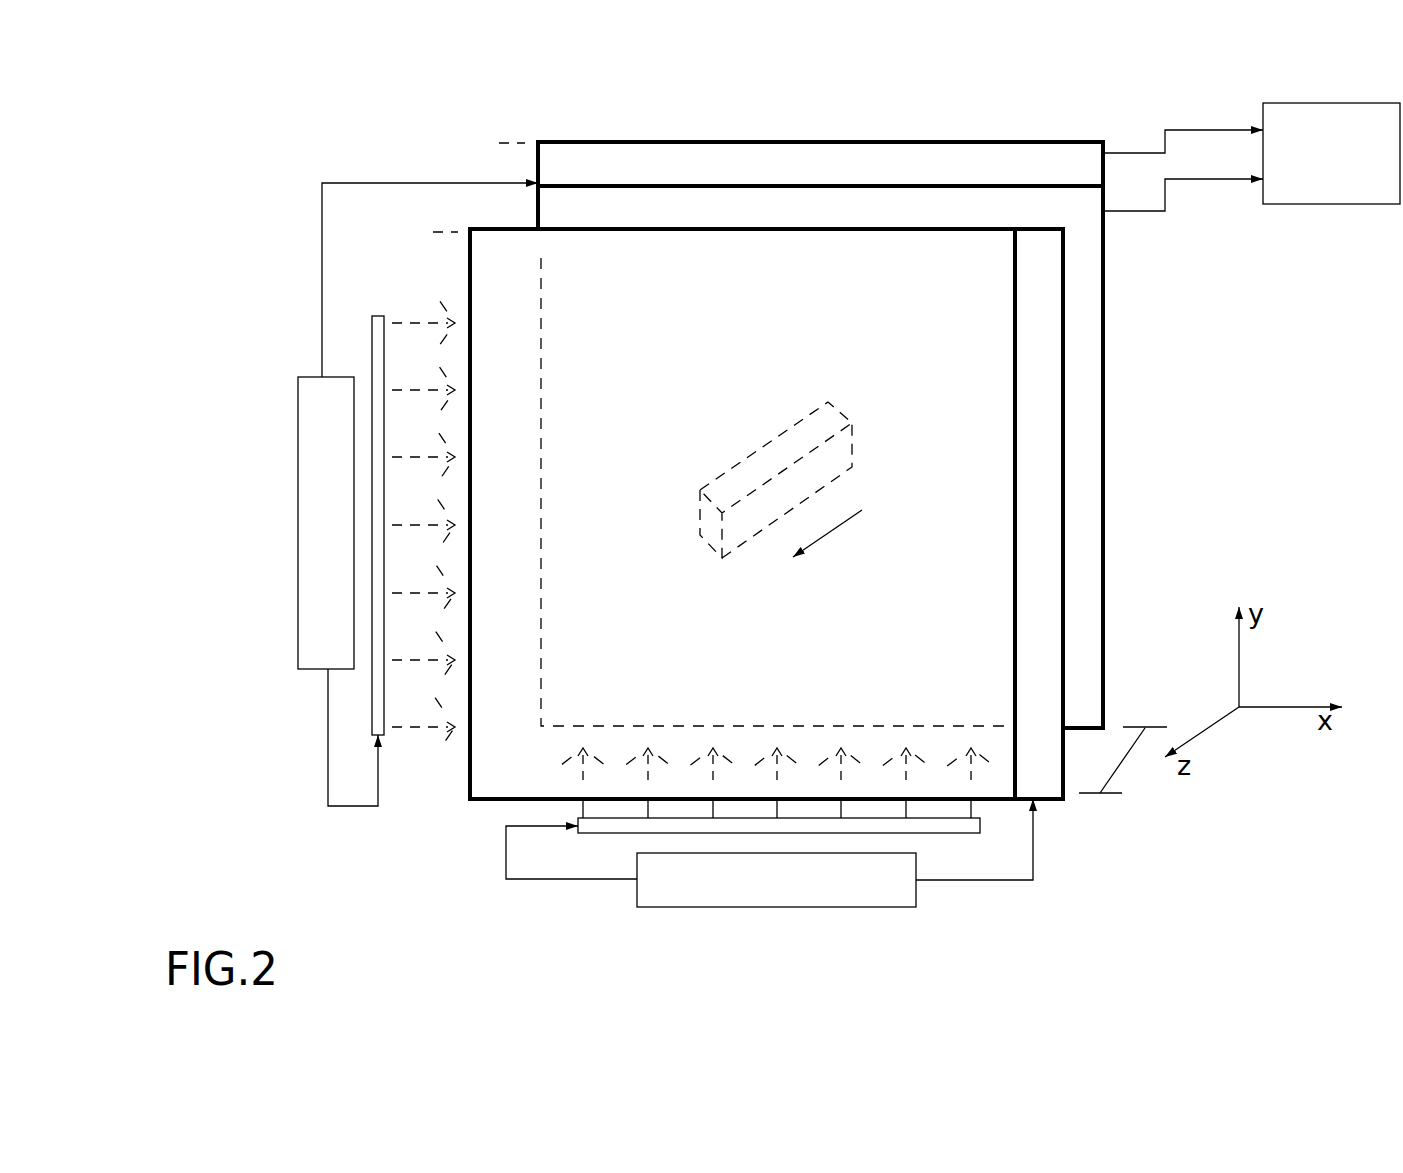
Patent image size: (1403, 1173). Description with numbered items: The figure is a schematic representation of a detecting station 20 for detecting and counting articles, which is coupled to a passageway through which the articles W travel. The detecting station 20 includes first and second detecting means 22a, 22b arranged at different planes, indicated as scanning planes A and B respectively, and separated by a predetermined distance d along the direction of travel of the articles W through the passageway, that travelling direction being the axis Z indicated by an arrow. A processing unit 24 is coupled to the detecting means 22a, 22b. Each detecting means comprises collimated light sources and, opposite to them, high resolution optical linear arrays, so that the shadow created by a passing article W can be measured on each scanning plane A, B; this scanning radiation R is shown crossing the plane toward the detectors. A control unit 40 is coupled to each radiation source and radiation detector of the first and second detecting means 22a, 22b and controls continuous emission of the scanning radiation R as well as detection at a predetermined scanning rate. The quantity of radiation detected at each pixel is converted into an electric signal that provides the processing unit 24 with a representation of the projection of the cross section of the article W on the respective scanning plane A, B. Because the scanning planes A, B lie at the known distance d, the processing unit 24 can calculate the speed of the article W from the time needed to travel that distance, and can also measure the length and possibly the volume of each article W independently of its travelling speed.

The detecting station 20 is at (338, 143).
The first detecting means 22a is at (1062, 140).
The second detecting means 22b is at (1066, 521).
The processing unit 24 is at (1362, 192).
The control unit 40 is at (298, 583).
The scanning plane A is at (1083, 383).
The scanning plane B is at (578, 262).
The article W is at (788, 452).
The radiation R is at (422, 323).
The axis Z is at (843, 525).
The distance d is at (1123, 762).